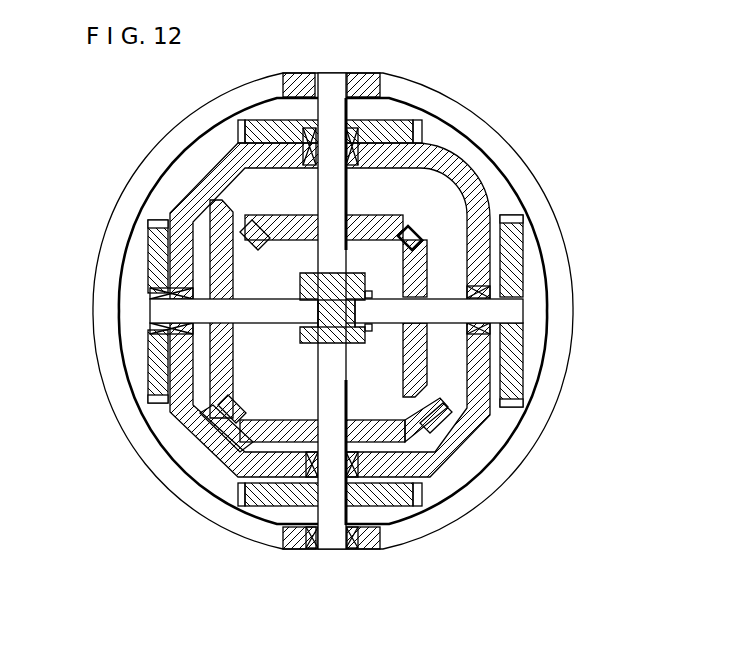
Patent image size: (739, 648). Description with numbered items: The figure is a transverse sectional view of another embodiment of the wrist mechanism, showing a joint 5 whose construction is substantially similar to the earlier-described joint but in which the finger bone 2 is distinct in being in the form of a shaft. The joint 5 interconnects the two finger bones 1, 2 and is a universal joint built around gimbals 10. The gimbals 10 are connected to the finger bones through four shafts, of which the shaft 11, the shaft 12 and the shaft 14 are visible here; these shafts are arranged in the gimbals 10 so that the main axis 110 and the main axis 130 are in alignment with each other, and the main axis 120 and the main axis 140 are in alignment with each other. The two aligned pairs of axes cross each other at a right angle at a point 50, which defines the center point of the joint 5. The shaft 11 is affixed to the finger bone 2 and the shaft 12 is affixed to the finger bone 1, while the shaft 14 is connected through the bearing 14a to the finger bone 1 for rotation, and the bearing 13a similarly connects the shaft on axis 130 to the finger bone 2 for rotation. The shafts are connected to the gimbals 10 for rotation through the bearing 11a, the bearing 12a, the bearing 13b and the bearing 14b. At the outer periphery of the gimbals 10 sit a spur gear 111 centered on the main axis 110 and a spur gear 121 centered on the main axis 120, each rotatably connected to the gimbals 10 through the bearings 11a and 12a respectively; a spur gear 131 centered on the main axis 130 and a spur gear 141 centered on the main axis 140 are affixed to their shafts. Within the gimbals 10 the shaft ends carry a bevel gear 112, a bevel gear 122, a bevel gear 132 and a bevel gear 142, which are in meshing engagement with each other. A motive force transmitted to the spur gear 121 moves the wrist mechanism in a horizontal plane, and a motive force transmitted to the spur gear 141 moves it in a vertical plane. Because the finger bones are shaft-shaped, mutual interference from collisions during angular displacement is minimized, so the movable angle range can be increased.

The finger bone 1 is at (368, 76).
The finger bone 2 is at (319, 327).
The joint 5 is at (487, 180).
The gimbals 10 is at (203, 173).
The shaft 11 is at (153, 323).
The bearing 11a is at (152, 290).
The shaft 12 is at (326, 193).
The bearing 12a is at (353, 160).
The bearing 13a is at (368, 295).
The bearing 13b is at (520, 262).
The shaft 14 is at (286, 517).
The bearing 14a is at (317, 547).
The bearing 14b is at (426, 498).
The point 50 is at (340, 332).
The main axis 110 is at (614, 311).
The spur gear 111 is at (155, 377).
The bevel gear 112 is at (230, 363).
The main axis 120 is at (332, 582).
The spur gear 121 is at (411, 112).
The bevel gear 122 is at (280, 237).
The main axis 130 is at (586, 311).
The spur gear 131 is at (520, 280).
The bevel gear 132 is at (410, 366).
The main axis 140 is at (340, 572).
The spur gear 141 is at (394, 518).
The bevel gear 142 is at (282, 428).